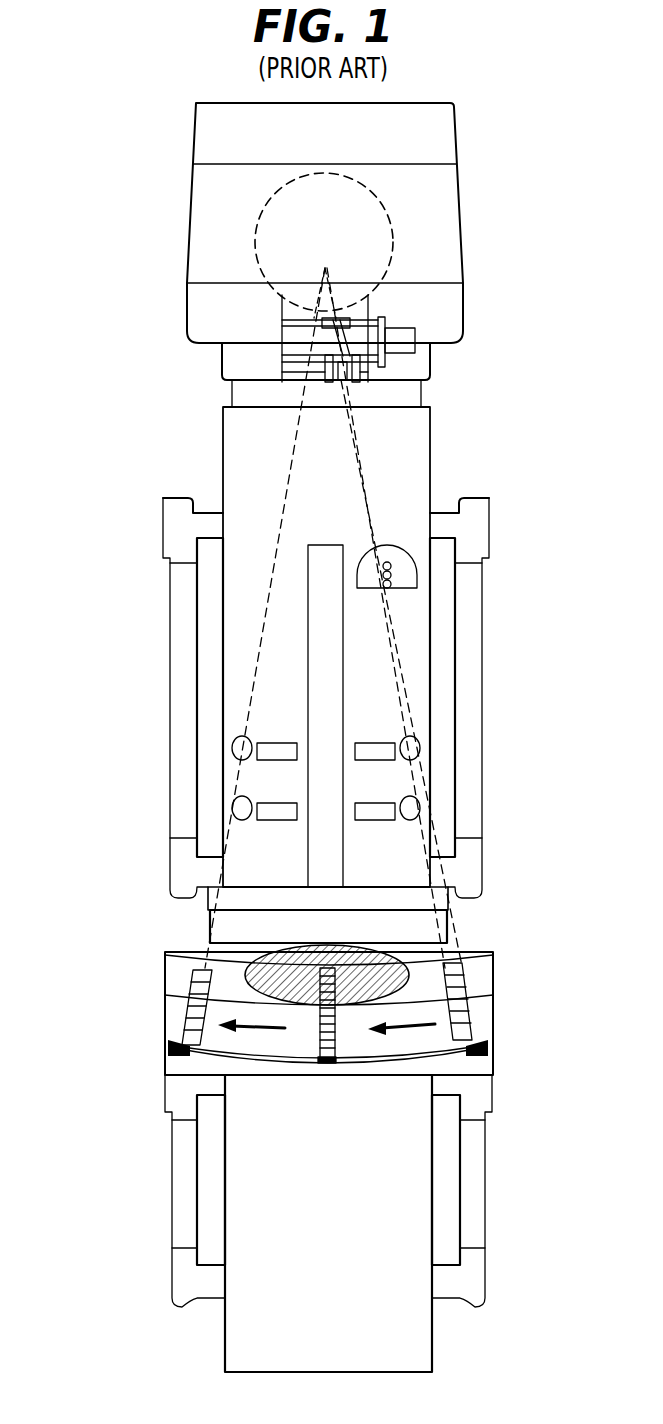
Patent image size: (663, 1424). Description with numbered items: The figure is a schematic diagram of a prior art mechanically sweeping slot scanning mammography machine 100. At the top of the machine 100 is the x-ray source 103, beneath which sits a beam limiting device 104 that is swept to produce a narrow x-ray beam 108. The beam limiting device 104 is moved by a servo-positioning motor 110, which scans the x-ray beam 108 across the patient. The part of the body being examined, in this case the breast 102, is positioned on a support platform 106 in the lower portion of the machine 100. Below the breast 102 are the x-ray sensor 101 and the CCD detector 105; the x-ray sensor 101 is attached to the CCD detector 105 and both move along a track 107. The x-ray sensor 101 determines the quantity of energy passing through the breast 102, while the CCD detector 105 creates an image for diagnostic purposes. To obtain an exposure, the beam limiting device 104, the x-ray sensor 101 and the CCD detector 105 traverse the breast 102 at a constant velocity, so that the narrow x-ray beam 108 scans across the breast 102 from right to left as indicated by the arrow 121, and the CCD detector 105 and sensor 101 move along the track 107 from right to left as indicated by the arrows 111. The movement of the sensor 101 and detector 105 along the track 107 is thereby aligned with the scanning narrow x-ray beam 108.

The mammography machine 100 is at (118, 1076).
The x-ray sensor 101 is at (462, 967).
The breast 102 is at (323, 947).
The x-ray source 103 is at (383, 240).
The beam limiting device 104 is at (358, 380).
The CCD detector 105 is at (465, 1013).
The support platform 106 is at (193, 992).
The track 107 is at (458, 1055).
The narrow x-ray beam 108 is at (367, 517).
The servo-positioning motor 110 is at (407, 342).
The arrows 111 is at (265, 1032).
The arrow 121 is at (345, 413).